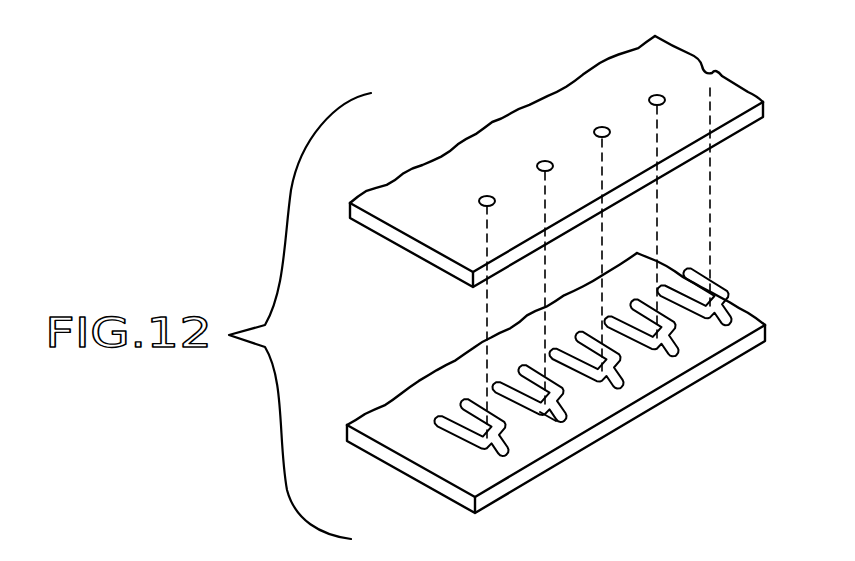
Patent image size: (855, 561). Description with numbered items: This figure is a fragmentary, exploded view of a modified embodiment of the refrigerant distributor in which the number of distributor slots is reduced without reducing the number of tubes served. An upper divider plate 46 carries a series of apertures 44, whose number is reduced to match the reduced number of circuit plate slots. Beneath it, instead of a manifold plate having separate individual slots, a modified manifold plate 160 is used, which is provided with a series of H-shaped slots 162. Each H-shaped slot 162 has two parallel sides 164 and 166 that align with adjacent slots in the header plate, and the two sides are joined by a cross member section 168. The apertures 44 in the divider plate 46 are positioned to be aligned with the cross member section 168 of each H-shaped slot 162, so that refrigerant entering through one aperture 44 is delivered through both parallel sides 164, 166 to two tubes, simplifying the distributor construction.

The apertures 44 is at (538, 166).
The cover plate 46 is at (440, 214).
The modified manifold plate 160 is at (447, 492).
The H-shaped slots 162 is at (536, 436).
The parallel side 164 is at (556, 405).
The parallel side 166 is at (590, 398).
The cross member section 168 is at (478, 440).